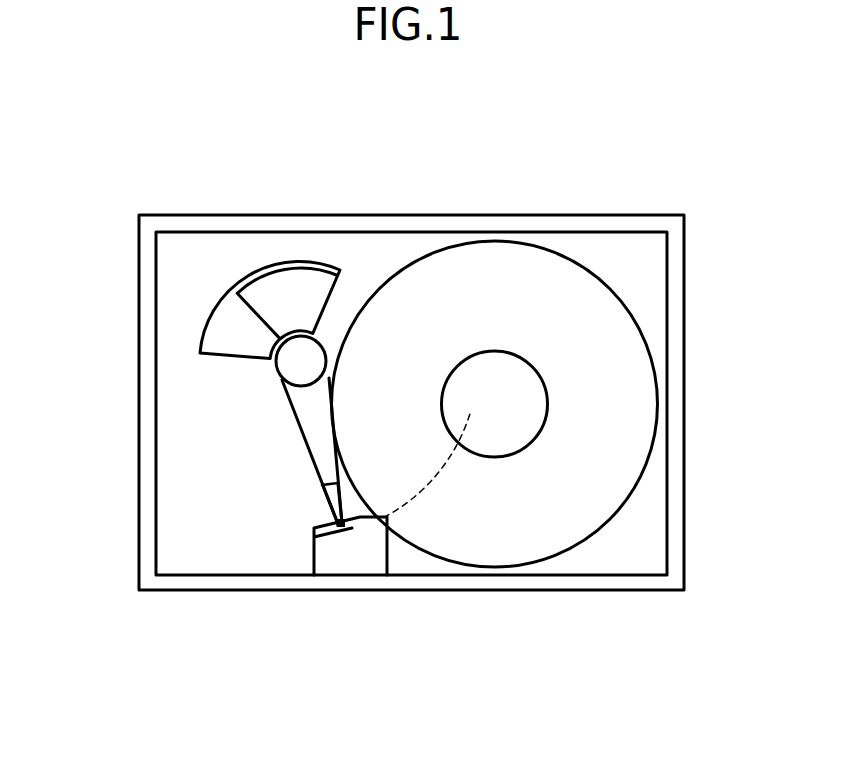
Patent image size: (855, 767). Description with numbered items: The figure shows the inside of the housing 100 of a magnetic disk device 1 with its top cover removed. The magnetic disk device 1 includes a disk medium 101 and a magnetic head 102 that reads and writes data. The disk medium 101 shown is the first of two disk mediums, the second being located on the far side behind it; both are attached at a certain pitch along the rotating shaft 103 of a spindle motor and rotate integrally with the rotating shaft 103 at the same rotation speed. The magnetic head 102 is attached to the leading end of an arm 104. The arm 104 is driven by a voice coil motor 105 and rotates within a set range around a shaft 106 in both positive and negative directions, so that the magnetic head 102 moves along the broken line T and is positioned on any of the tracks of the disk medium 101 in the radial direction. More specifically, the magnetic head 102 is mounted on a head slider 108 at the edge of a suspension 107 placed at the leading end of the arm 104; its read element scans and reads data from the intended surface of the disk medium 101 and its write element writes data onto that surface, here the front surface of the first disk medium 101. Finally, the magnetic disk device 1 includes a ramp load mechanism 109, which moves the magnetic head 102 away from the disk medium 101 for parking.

The magnetic disk device 1 is at (612, 161).
The housing 100 is at (660, 215).
The disk medium 101 is at (627, 363).
The magnetic head 102 is at (333, 545).
The rotating shaft 103 is at (529, 387).
The arm 104 is at (315, 425).
The voice coil motor 105 is at (216, 290).
The shaft 106 is at (293, 368).
The suspension 107 is at (327, 495).
The head slider 108 is at (333, 545).
The ramp load mechanism 109 is at (372, 561).
The broken line T is at (428, 485).